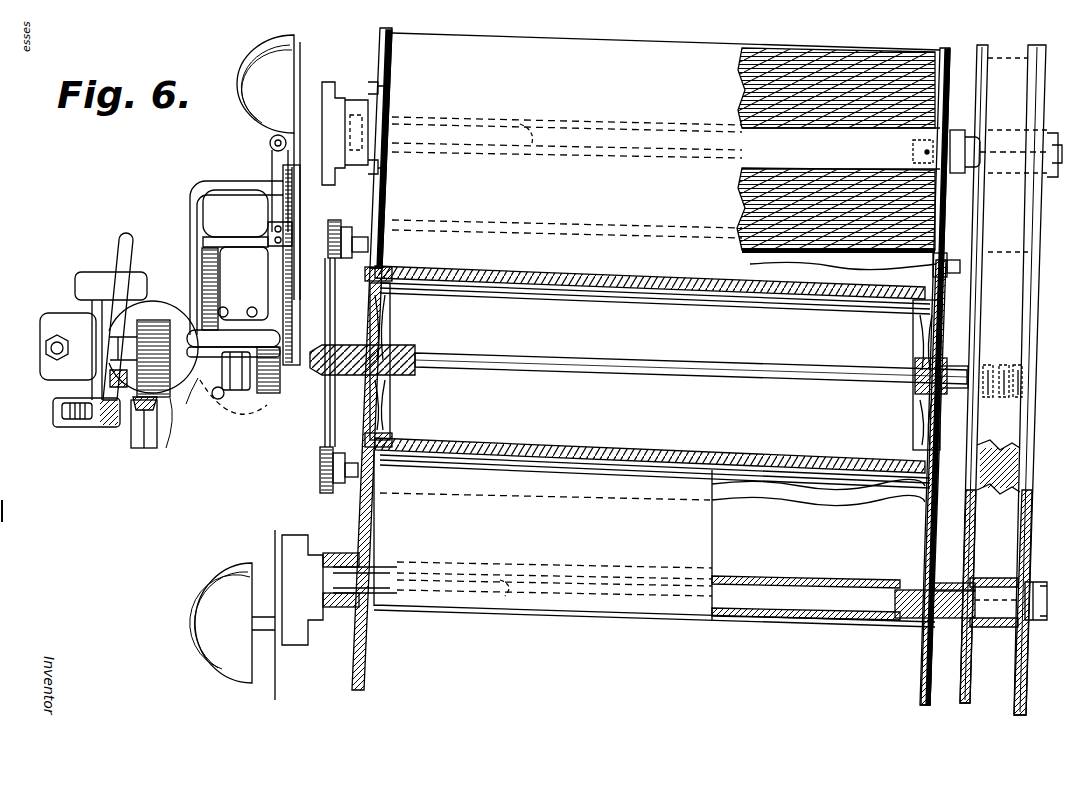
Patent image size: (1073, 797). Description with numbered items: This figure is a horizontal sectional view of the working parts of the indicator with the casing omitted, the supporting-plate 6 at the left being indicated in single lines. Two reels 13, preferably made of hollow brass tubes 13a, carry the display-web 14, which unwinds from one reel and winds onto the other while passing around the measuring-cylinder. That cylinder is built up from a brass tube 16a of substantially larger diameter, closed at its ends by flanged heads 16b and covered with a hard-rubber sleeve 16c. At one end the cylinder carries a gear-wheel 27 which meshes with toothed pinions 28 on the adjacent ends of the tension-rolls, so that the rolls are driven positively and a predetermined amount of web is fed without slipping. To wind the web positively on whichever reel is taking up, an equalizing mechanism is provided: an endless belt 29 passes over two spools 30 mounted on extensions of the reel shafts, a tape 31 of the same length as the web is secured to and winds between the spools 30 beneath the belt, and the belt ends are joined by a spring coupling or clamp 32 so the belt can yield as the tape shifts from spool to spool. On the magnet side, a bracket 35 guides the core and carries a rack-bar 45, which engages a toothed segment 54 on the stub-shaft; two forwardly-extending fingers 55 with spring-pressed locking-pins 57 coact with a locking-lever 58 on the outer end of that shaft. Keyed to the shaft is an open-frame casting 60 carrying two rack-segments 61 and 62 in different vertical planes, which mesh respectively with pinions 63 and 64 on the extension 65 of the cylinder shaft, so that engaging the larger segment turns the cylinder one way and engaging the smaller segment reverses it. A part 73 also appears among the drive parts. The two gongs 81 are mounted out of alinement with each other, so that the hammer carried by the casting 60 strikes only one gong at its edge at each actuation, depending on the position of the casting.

The supporting-plate 6 is at (311, 82).
The reels 13 is at (941, 48).
The hollow tubes 13a is at (872, 620).
The display-web 14 is at (775, 50).
The brass tube 16a is at (846, 290).
The flanged heads 16b is at (392, 318).
The hard-rubber sleeve 16c is at (742, 287).
The gear-wheel 27 is at (325, 430).
The toothed pinions 28 is at (333, 222).
The endless belt 29 is at (1025, 312).
The spools 30 is at (1040, 47).
The tape 31 is at (982, 578).
The spring coupling or clamp 32 is at (1004, 396).
The bracket 35 is at (50, 330).
The rack-bar 45 is at (140, 428).
The toothed segment 54 is at (171, 400).
The forwardly-extending fingers 55 is at (107, 307).
The spring-pressed locking-pin 57 is at (60, 426).
The locking-lever 58 is at (118, 243).
The open-frame casting 60 is at (196, 215).
The rack-segment 61 is at (296, 307).
The rack-segment 62 is at (219, 288).
The pinion 63 is at (268, 395).
The pinion 64 is at (225, 403).
The extension of the shaft of the measuring-cylinder 65 is at (310, 360).
The stud 73 is at (240, 392).
The gongs 81 is at (258, 64).